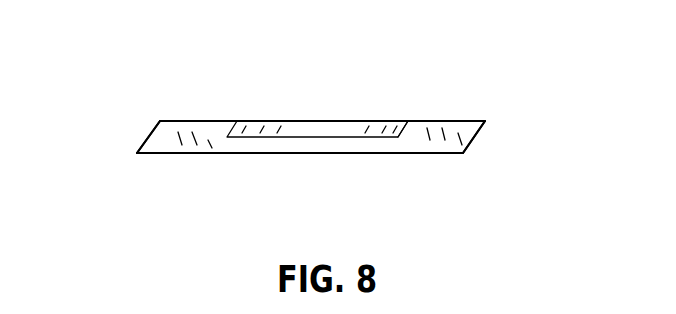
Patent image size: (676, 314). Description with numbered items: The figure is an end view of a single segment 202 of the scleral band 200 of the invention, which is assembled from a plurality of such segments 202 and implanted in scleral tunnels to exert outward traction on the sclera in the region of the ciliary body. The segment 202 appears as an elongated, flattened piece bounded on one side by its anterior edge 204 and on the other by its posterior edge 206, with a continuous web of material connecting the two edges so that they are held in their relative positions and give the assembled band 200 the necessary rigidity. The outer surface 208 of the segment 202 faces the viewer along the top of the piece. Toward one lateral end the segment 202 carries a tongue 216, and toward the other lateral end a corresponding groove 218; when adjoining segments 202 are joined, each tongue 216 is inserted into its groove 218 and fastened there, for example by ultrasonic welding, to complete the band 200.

The scleral band 200 is at (205, 154).
The segment 202 is at (462, 82).
The anterior edge 204 is at (478, 133).
The posterior edge 206 is at (148, 138).
The outer surface 208 is at (198, 120).
The tongue 216 is at (403, 132).
The groove 218 is at (307, 138).